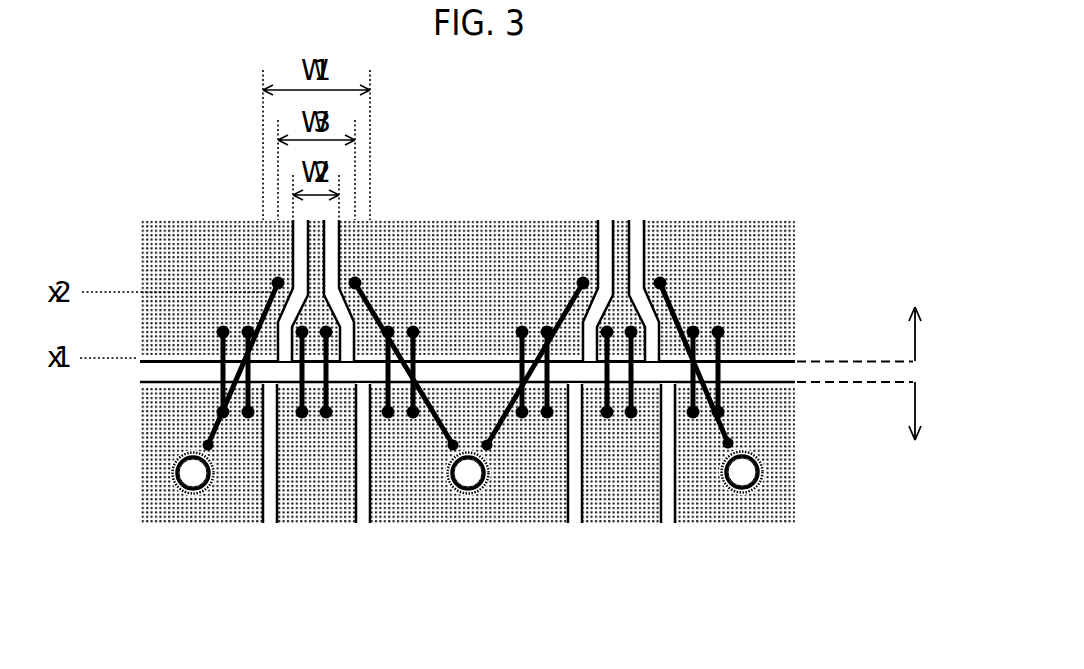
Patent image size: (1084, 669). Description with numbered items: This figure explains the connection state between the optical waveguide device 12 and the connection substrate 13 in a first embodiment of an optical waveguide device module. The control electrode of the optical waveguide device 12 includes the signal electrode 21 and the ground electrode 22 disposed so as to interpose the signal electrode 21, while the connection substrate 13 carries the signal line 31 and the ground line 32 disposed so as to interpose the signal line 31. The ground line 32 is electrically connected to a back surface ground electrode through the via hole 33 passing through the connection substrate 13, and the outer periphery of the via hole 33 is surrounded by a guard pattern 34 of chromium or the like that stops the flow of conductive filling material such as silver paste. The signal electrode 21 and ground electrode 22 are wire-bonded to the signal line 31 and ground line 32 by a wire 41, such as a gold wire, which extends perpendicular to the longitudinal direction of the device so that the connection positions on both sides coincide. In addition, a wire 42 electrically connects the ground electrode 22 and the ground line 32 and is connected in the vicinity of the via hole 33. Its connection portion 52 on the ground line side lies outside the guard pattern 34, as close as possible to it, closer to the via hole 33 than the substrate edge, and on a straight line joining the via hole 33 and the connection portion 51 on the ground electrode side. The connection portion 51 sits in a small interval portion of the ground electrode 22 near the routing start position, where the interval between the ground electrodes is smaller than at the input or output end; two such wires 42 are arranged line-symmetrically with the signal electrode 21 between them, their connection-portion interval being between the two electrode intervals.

The optical waveguide device 12 is at (878, 334).
The connection substrate 13 is at (879, 411).
The signal electrode 21 is at (620, 242).
The ground electrode 22 is at (687, 240).
The signal line 31 is at (638, 508).
The ground line 32 is at (715, 508).
The via hole 33 is at (743, 478).
The guard pattern 34 is at (763, 475).
The wire 41 is at (723, 350).
The wire 42 is at (723, 428).
The connection portion 51 is at (664, 282).
The connection portion 52 is at (733, 443).